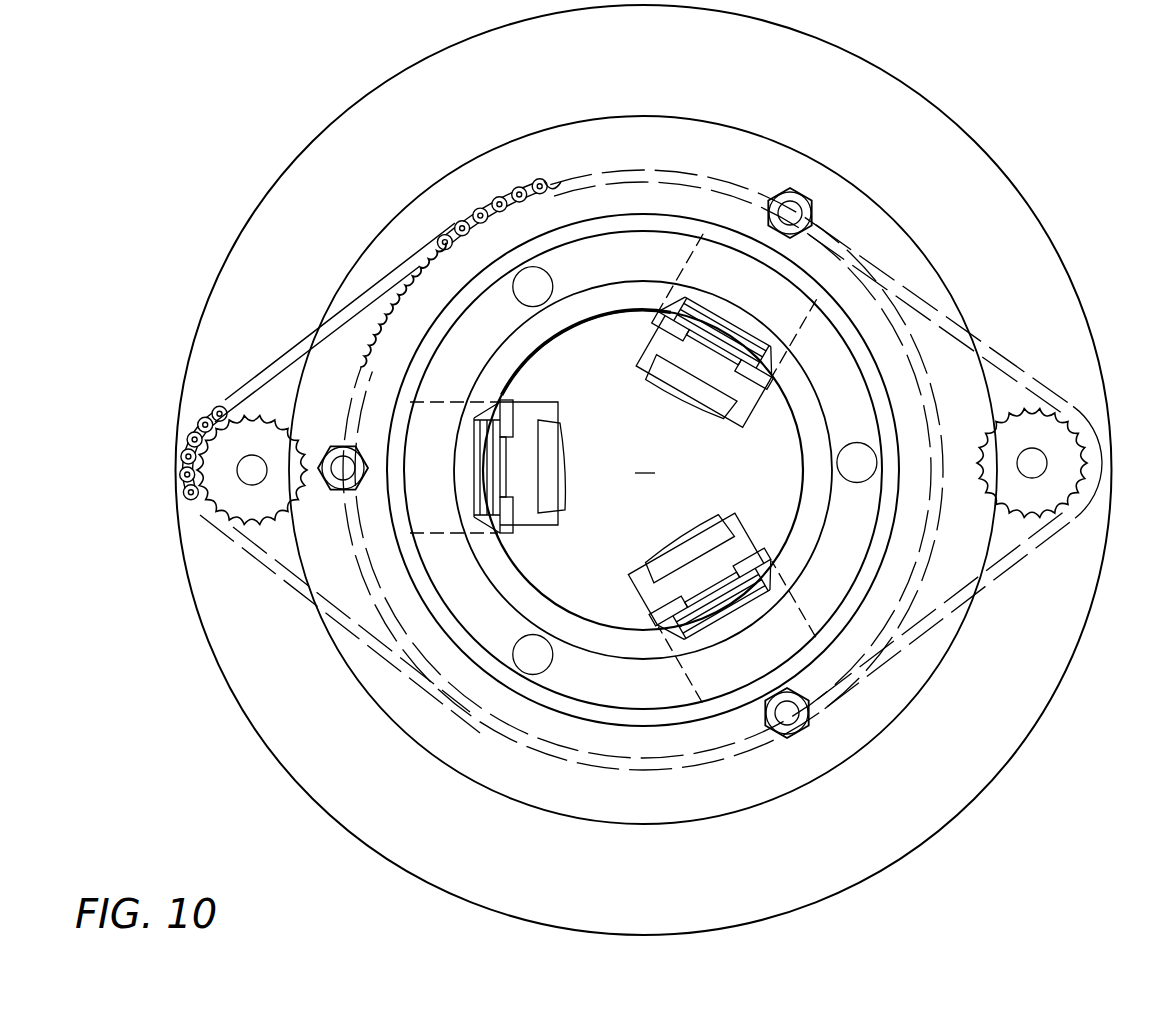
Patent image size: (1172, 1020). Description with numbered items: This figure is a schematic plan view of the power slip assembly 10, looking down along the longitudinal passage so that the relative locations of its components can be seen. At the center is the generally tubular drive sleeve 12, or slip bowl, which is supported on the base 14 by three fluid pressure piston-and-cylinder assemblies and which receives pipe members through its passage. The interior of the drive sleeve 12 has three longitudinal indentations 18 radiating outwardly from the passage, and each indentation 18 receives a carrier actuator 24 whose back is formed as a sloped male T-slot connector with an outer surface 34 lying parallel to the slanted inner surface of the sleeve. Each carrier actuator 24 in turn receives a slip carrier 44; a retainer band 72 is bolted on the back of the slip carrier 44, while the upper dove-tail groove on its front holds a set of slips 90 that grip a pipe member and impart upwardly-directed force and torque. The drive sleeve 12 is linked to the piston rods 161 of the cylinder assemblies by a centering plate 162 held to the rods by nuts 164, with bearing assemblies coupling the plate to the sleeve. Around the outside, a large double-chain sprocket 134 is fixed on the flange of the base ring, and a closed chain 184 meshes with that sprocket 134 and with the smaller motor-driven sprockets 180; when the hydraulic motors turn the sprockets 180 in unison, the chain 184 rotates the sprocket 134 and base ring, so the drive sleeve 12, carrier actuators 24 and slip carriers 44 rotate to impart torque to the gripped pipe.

The power slip assembly 10 is at (636, 470).
The drive sleeve 12 is at (613, 272).
The base 14 is at (240, 683).
The longitudinal indentation 18 is at (690, 678).
The carrier actuator 24 is at (711, 604).
The outer surface 34 is at (775, 373).
The slip carrier 44 is at (507, 466).
The retainer band 72 is at (843, 463).
The slips 90 is at (562, 452).
The double-chain sprocket 134 is at (380, 333).
The piston rod 161 is at (786, 714).
The centering plate 162 is at (608, 130).
The nut 164 is at (813, 713).
The sprocket 180 is at (222, 496).
The chain 184 is at (452, 230).